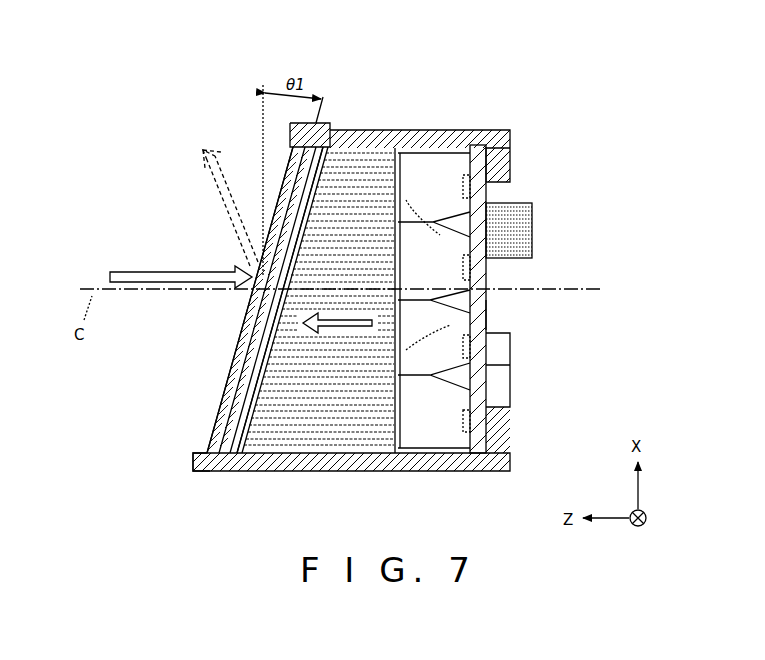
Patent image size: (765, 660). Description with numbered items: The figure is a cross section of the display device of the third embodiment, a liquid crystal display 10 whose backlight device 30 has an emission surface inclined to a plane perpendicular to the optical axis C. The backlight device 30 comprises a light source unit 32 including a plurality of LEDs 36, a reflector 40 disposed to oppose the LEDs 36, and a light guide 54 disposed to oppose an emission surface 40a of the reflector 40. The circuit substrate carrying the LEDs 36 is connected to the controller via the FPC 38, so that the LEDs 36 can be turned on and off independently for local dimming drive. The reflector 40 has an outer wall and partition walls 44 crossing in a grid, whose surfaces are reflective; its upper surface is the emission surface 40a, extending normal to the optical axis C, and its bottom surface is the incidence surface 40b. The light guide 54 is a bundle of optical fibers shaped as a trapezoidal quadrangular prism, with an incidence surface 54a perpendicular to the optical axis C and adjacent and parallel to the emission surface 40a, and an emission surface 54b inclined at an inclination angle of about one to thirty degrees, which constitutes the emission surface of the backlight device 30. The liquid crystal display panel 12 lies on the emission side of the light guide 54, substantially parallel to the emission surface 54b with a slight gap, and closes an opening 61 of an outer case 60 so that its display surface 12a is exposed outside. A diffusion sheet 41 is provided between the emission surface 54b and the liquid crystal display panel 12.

The liquid crystal display 10 is at (401, 96).
The liquid crystal display panel 12 is at (219, 388).
The display surface 12a is at (244, 338).
The backlight device 30 is at (421, 167).
The light source unit 32 is at (487, 299).
The LEDs 36 is at (487, 192).
The FPC 38 is at (534, 223).
The reflector 40 is at (486, 389).
The emission surface 40a is at (403, 206).
The incidence surface 40b is at (486, 368).
The diffusion sheet 41 is at (344, 127).
The partition walls 44 is at (470, 330).
The light guide 54 is at (356, 437).
The incidence surface 54a is at (398, 440).
The emission surface 54b is at (224, 446).
The outer case 60 is at (298, 456).
The opening 61 is at (198, 452).